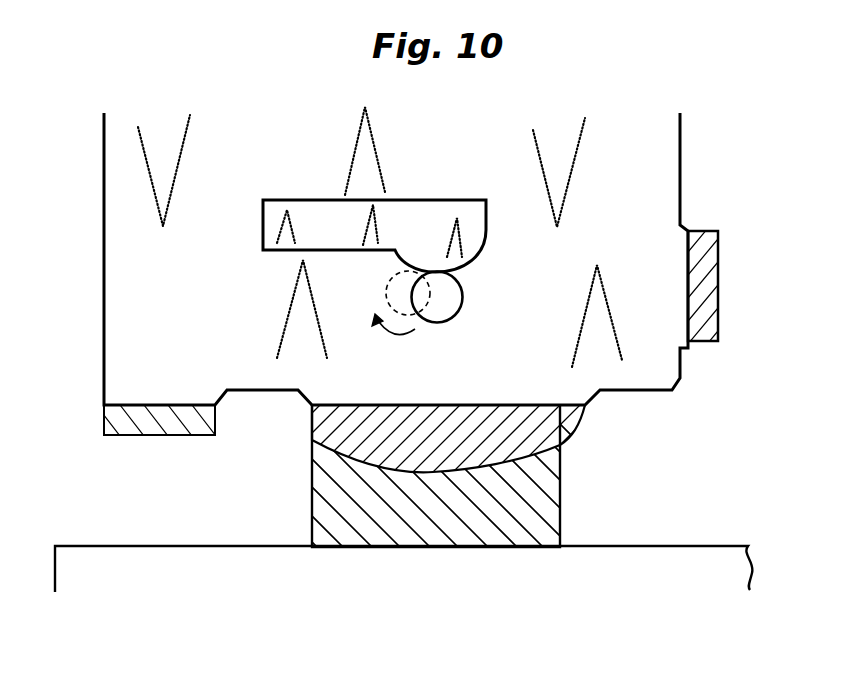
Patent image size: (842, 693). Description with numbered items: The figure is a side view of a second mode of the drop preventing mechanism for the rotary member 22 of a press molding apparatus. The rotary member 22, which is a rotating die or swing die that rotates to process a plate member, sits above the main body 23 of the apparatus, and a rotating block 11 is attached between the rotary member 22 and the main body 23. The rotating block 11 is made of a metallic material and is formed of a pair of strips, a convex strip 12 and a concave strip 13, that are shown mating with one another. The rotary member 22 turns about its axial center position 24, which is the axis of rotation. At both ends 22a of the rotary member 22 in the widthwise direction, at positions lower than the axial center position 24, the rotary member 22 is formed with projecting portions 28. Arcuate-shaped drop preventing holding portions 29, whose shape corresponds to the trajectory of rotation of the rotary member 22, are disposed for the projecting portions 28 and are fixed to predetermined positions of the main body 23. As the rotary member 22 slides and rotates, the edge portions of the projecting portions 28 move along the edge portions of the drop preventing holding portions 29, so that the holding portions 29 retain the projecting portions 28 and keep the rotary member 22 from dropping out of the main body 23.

The rotating block 11 is at (311, 482).
The convex strip 12 is at (557, 420).
The concave strip 13 is at (537, 495).
The rotary member 22 is at (661, 146).
The end of the rotary member in the widthwise direction 22a is at (477, 280).
The main body 23 is at (360, 566).
The axial center position 24 is at (435, 224).
The projecting portion 28 is at (447, 300).
The drop preventing holding portion 29 is at (463, 233).